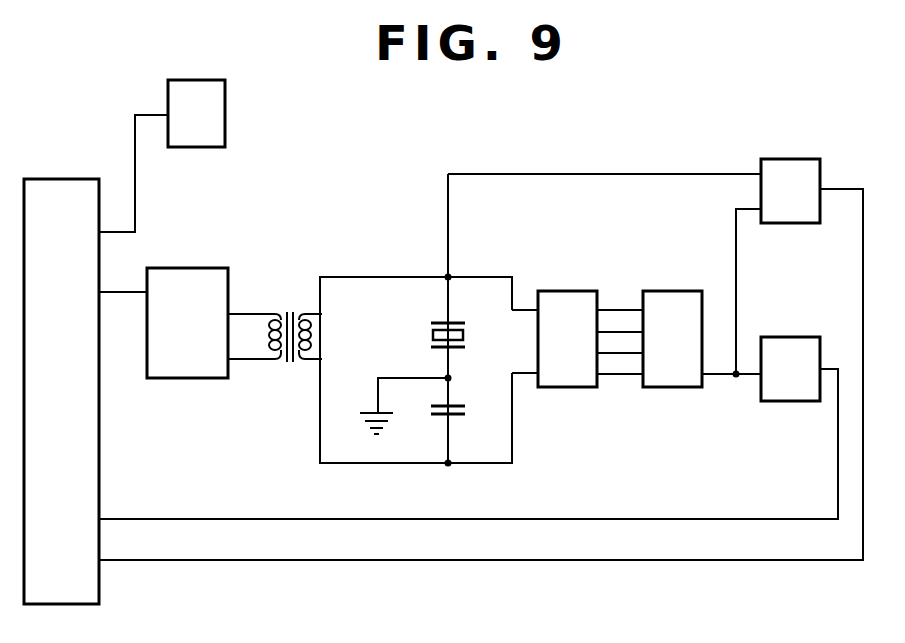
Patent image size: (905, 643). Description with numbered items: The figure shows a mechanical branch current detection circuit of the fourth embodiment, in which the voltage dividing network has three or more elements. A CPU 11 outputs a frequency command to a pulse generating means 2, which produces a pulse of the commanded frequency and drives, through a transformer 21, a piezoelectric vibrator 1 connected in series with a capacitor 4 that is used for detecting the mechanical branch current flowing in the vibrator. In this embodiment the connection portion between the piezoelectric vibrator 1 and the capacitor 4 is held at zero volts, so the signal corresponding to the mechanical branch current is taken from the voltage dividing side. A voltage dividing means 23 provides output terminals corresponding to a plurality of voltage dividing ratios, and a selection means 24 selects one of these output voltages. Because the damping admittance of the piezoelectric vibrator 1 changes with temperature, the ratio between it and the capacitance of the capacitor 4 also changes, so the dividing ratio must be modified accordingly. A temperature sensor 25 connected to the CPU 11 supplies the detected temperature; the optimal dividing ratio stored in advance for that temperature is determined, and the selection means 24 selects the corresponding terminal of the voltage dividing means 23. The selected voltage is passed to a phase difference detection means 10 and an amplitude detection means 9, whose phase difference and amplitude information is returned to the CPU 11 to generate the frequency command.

The CPU 11 is at (78, 179).
The temperature sensor 25 is at (226, 95).
The pulse generating means 2 is at (209, 267).
The transformer 21 is at (282, 312).
The piezoelectric vibrator 1 is at (468, 334).
The capacitor 4 is at (468, 409).
The voltage dividing means 23 is at (577, 291).
The selection means 24 is at (683, 291).
The phase difference detection means 10 is at (802, 159).
The amplitude detection means 9 is at (802, 337).